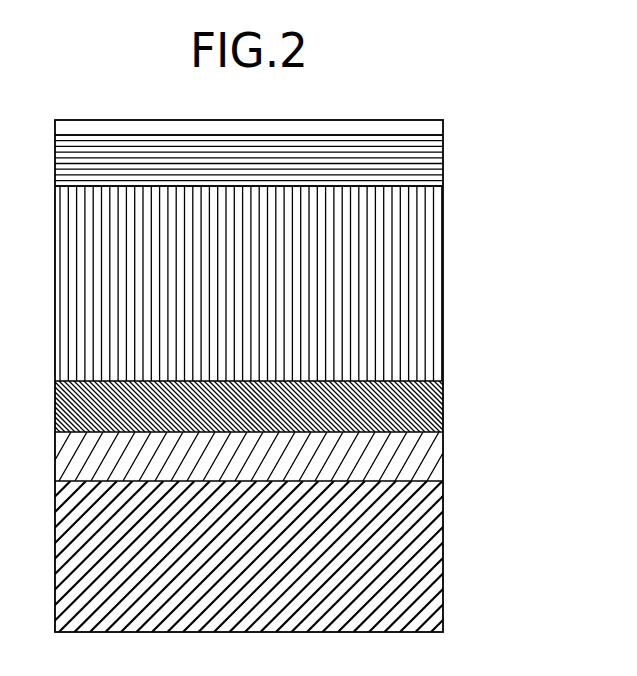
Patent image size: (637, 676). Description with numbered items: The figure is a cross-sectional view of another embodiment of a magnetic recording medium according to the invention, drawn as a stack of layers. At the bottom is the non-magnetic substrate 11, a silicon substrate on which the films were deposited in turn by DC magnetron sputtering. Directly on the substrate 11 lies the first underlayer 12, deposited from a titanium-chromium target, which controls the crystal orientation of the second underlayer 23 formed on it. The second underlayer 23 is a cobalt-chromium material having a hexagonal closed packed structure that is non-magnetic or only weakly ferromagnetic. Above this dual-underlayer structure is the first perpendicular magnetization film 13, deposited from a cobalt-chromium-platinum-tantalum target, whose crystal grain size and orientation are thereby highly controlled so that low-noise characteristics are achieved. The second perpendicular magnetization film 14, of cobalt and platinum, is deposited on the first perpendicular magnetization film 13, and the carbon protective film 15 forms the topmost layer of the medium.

The non-magnetic substrate 11 is at (433, 555).
The first underlayer 12 is at (433, 455).
The second underlayer 23 is at (433, 404).
The first perpendicular magnetization film 13 is at (432, 270).
The second perpendicular magnetization film 14 is at (433, 160).
The protective film 15 is at (430, 130).